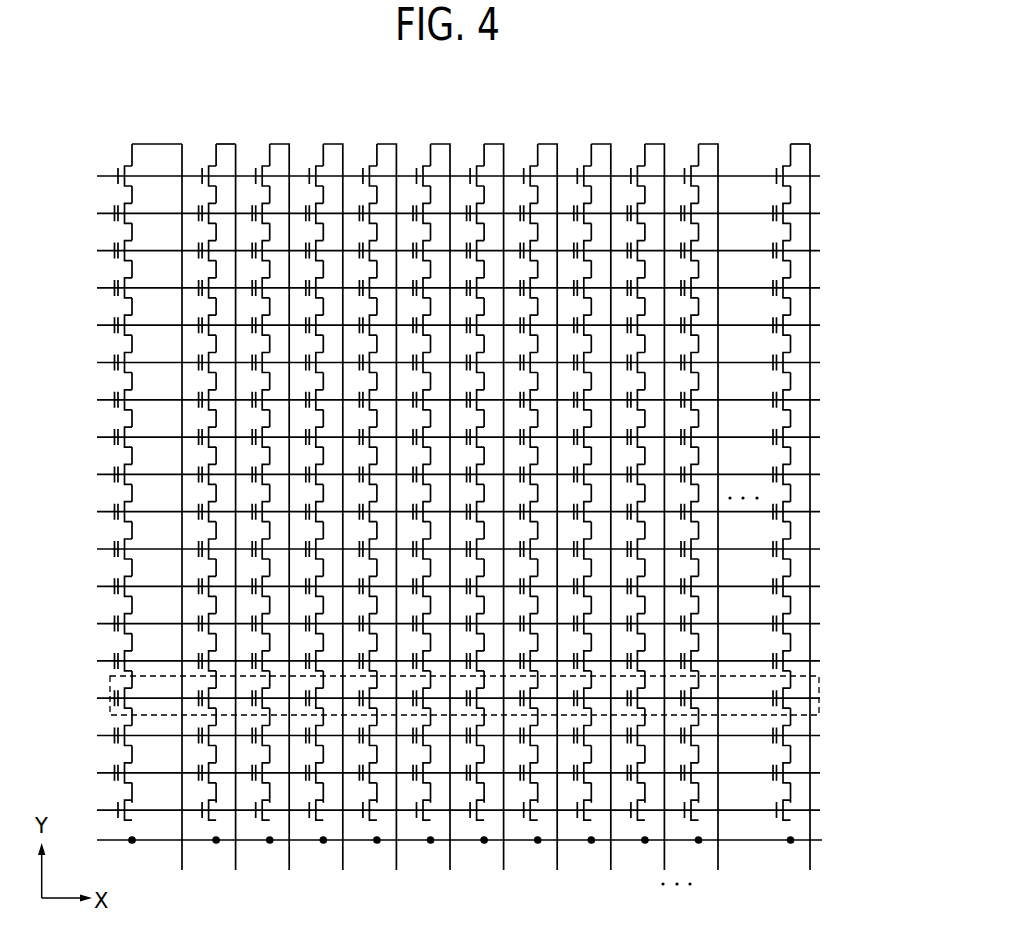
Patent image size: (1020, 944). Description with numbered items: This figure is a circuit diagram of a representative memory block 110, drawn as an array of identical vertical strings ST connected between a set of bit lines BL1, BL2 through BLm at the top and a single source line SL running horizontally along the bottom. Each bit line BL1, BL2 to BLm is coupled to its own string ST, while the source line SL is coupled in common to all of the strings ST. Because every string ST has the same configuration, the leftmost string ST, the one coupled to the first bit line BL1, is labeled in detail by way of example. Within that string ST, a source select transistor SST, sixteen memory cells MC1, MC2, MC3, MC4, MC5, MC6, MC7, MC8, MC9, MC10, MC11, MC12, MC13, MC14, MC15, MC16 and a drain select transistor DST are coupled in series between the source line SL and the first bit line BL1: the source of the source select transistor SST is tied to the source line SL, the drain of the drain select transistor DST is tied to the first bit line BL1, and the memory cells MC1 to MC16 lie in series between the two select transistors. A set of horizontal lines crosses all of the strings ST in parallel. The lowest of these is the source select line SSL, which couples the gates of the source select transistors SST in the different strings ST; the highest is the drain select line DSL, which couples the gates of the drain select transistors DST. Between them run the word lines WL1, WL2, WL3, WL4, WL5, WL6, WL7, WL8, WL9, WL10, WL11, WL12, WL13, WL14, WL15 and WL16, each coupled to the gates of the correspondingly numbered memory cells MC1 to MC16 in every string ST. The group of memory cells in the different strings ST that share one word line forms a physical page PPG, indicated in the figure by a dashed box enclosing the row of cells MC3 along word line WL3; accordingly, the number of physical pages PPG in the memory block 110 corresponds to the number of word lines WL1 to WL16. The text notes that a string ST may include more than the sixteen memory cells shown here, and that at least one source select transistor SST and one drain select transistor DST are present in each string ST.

The memory block 110 is at (730, 119).
The string ST is at (163, 462).
The physical page PPG is at (819, 692).
The drain select transistor DST is at (141, 168).
The source select transistor SST is at (141, 802).
The memory cell MC1 is at (142, 764).
The memory cell MC2 is at (142, 727).
The memory cell MC3 is at (142, 690).
The memory cell MC4 is at (142, 652).
The memory cell MC5 is at (142, 615).
The memory cell MC6 is at (142, 578).
The memory cell MC7 is at (142, 540).
The memory cell MC8 is at (142, 503).
The memory cell MC9 is at (142, 465).
The memory cell MC10 is at (146, 429).
The memory cell MC11 is at (146, 391).
The memory cell MC12 is at (146, 354).
The memory cell MC13 is at (146, 317).
The memory cell MC14 is at (146, 279).
The memory cell MC15 is at (146, 242).
The memory cell MC16 is at (146, 205).
The drain select line DSL is at (441, 176).
The source select line SSL is at (441, 810).
The source line SL is at (447, 840).
The word line WL1 is at (441, 773).
The word line WL2 is at (441, 736).
The word line WL3 is at (441, 698).
The word line WL4 is at (441, 661).
The word line WL5 is at (441, 624).
The word line WL6 is at (441, 586).
The word line WL7 is at (441, 549).
The word line WL8 is at (441, 512).
The word line WL9 is at (441, 474).
The word line WL10 is at (436, 437).
The word line WL11 is at (436, 400).
The word line WL12 is at (436, 363).
The word line WL13 is at (436, 325).
The word line WL14 is at (436, 288).
The word line WL15 is at (436, 251).
The word line WL16 is at (436, 213).
The first bit line BL1 is at (182, 522).
The bit line BL2 is at (237, 522).
The bit line BLm is at (808, 523).